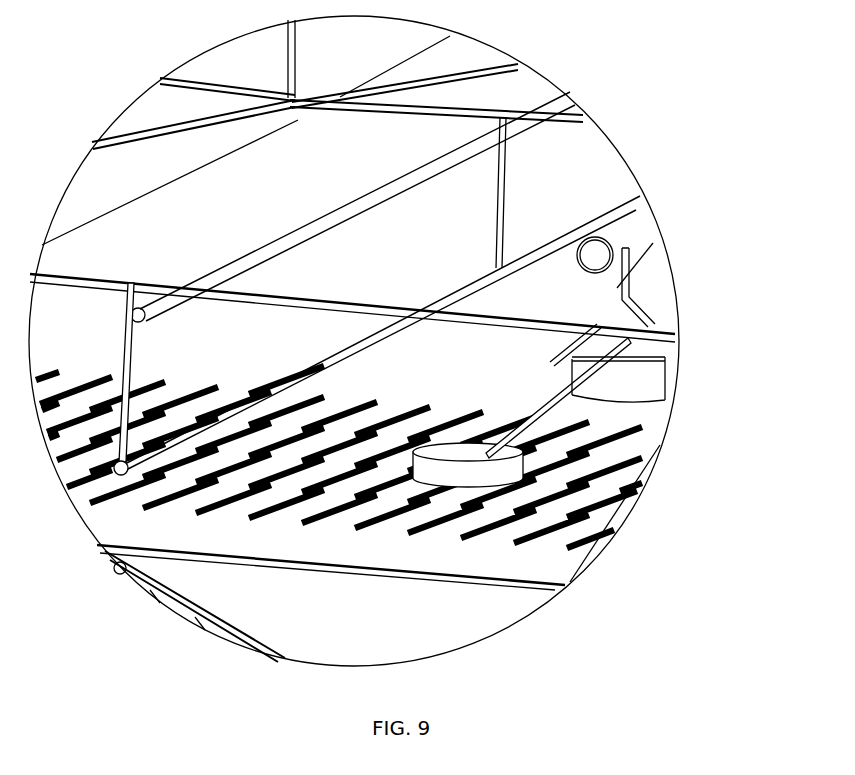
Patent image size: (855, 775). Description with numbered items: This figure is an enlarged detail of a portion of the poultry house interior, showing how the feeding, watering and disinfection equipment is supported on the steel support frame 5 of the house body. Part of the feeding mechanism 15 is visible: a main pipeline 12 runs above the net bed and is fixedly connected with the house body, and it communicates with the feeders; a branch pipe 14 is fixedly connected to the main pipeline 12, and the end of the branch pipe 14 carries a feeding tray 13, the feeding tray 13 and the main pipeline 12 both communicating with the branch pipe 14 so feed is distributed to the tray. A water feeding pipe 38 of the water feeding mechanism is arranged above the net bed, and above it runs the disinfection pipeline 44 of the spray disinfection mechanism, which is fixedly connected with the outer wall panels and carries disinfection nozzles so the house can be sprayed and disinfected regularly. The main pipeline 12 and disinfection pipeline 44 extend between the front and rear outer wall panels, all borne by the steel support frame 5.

The disinfection pipeline 44 is at (360, 197).
The steel support frame 5 is at (470, 80).
The water feeding pipe 38 is at (290, 375).
The main pipeline 12 is at (632, 250).
The branch pipe 14 is at (653, 245).
The feeding tray 13 is at (505, 470).
The feeding mechanism 15 is at (605, 407).